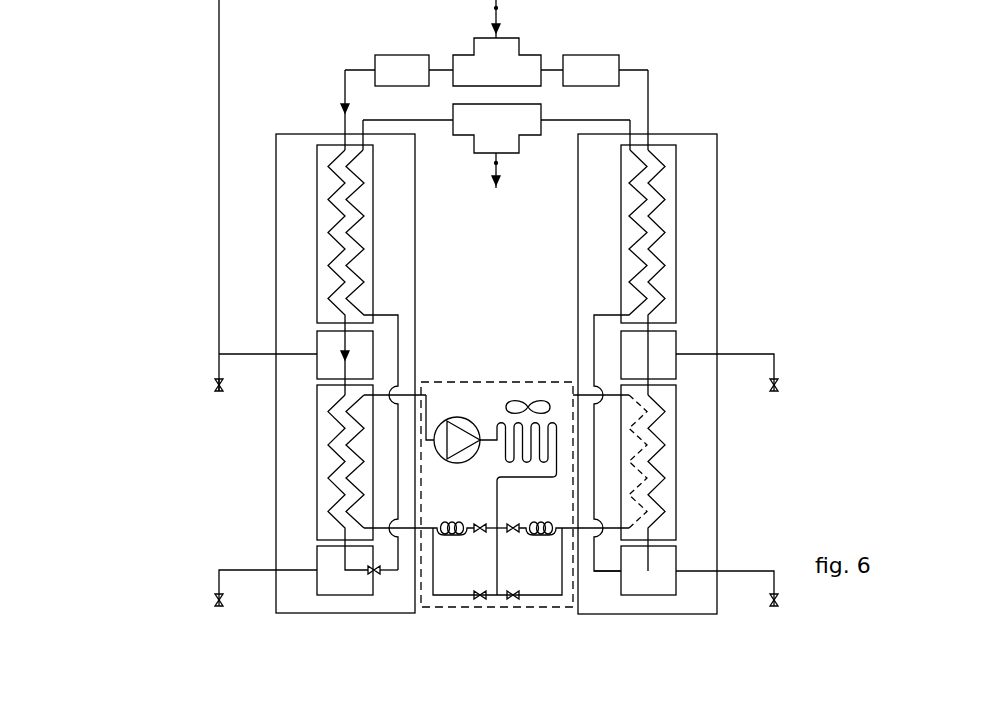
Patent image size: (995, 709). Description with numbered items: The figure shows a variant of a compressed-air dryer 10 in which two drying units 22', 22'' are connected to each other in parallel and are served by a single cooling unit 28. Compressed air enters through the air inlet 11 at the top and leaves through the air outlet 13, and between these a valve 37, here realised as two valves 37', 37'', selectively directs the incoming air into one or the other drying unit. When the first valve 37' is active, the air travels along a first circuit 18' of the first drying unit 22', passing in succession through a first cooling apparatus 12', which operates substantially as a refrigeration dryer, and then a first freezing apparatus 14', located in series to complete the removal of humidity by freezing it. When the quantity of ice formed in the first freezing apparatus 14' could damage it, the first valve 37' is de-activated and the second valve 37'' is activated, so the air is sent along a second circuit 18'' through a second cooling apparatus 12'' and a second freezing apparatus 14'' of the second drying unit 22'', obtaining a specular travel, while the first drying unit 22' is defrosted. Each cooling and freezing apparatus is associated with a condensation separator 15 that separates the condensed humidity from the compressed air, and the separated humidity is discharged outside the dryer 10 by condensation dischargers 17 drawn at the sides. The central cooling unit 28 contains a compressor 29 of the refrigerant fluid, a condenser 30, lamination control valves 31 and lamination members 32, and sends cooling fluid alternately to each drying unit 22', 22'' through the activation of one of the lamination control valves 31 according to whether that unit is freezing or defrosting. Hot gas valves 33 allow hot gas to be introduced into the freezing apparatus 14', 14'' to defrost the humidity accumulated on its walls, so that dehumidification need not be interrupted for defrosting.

The dryer 10 is at (765, 151).
The air inlet 11 is at (494, 9).
The air outlet 13 is at (494, 165).
The valve 37 is at (513, 81).
The first valve 37' is at (402, 48).
The second valve 37'' is at (591, 48).
The first drying unit 22' is at (314, 373).
The second drying unit 22'' is at (684, 374).
The first cooling apparatus 12' is at (312, 357).
The second cooling apparatus 12'' is at (688, 358).
The first freezing apparatus 14' is at (330, 477).
The second freezing apparatus 14'' is at (672, 478).
The condensation separator 15 is at (317, 343).
The condensation discharger 17 is at (216, 387).
The first circuit 18' is at (400, 611).
The second circuit 18'' is at (597, 614).
The cooling unit 28 is at (497, 502).
The compressor 29 is at (458, 418).
The condenser 30 is at (499, 421).
The lamination control valve 31 is at (481, 533).
The lamination member 32 is at (535, 522).
The hot gas valve 33 is at (514, 601).